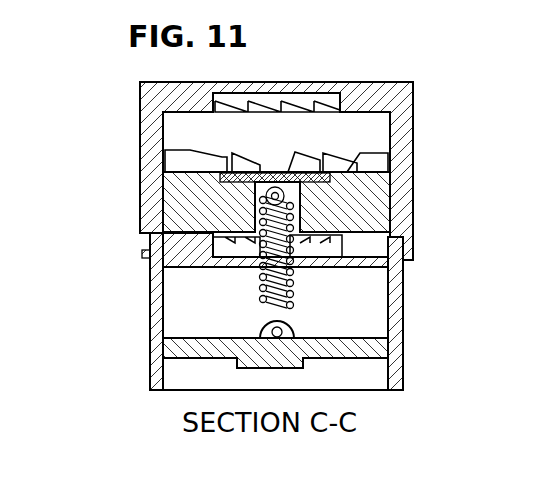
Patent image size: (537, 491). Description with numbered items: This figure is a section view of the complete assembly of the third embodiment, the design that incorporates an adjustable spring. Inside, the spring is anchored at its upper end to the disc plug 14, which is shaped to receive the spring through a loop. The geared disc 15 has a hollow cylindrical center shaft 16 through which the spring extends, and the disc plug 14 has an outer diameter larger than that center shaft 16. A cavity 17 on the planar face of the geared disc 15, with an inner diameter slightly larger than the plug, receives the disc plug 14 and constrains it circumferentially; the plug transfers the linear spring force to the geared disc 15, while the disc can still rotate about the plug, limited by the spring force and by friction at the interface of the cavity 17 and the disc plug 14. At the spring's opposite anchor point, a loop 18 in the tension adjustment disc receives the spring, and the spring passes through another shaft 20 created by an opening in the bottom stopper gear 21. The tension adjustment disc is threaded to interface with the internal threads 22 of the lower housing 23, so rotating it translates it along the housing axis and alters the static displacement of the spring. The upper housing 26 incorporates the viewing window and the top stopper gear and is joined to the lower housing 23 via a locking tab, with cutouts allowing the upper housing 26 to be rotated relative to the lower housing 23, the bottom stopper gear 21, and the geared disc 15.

The disc plug 14 is at (248, 181).
The geared disc 15 is at (350, 207).
The hollow cylindrical center shaft 16 is at (245, 212).
The cavity 17 is at (322, 182).
The loop 18 is at (220, 348).
The shaft 20 is at (240, 266).
The bottom stopper gear 21 is at (183, 260).
The internal threads 22 is at (392, 367).
The lower housing 23 is at (397, 330).
The upper housing 26 is at (400, 105).